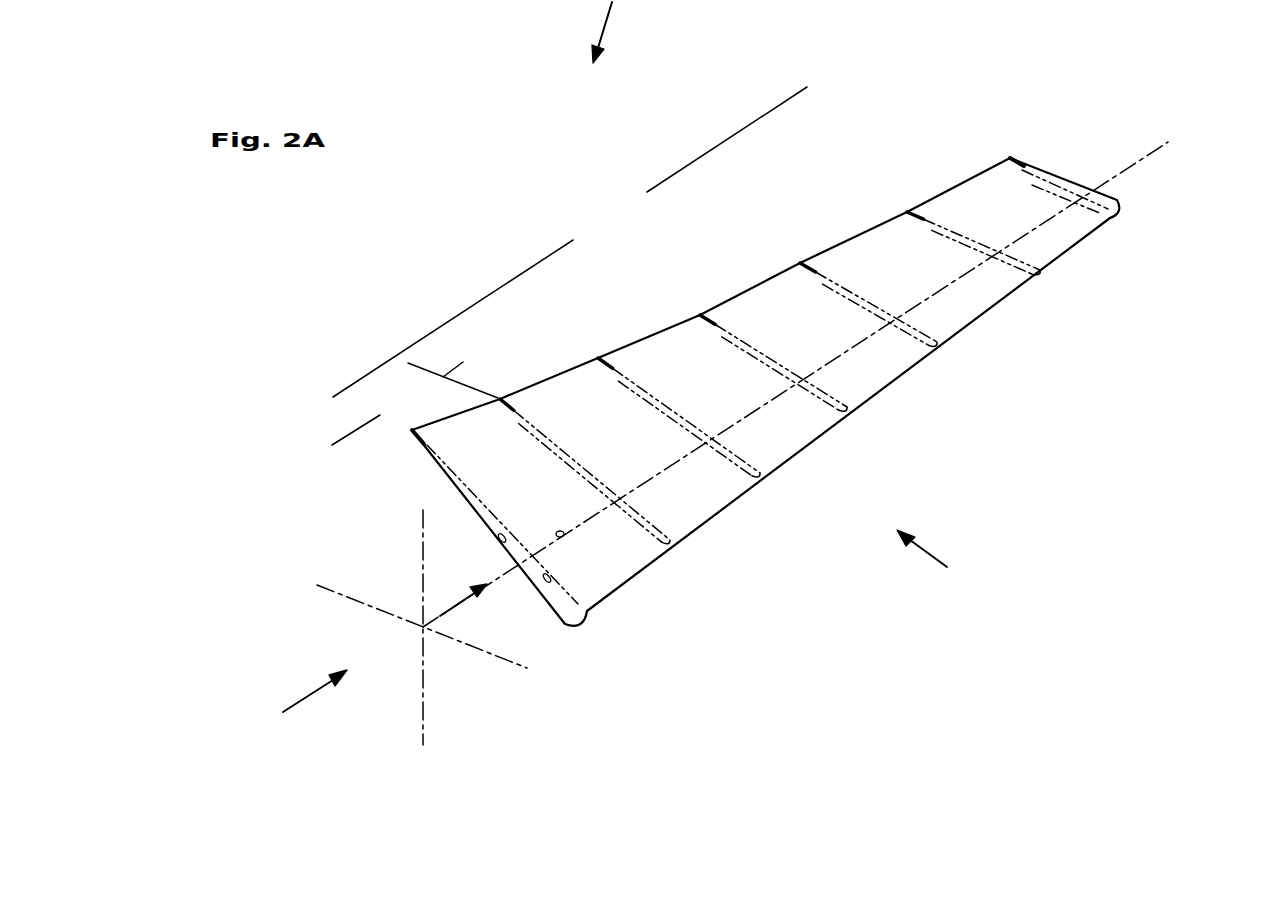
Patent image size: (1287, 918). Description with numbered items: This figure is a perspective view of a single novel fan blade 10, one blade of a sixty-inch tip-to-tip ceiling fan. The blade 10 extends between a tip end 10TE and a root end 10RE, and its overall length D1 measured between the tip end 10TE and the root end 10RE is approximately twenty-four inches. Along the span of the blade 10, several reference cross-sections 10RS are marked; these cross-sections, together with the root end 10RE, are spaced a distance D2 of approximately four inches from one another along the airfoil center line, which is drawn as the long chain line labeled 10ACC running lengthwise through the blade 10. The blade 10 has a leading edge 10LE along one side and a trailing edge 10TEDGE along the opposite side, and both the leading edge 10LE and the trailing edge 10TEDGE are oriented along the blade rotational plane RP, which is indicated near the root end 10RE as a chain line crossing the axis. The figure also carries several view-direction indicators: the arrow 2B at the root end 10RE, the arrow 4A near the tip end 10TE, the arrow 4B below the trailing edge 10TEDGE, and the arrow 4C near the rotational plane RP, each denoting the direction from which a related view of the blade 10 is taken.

The fan blade 10 is at (463, 167).
The tip end 10TE is at (997, 158).
The root end 10RE is at (407, 428).
The leading edge 10LE is at (967, 180).
The trailing edge 10TEDGE is at (902, 375).
The reference cross-sections 10RS is at (907, 212).
The aerodynamic center chord line 10ACC is at (838, 382).
The overall length D1 is at (569, 266).
The cross-section spacing D2 is at (445, 385).
The blade rotational plane RP is at (483, 653).
The section view 2B direction 2B is at (471, 604).
The view 4A direction 4A is at (591, 32).
The view 4B direction 4B is at (918, 560).
The view 4C direction 4C is at (315, 688).